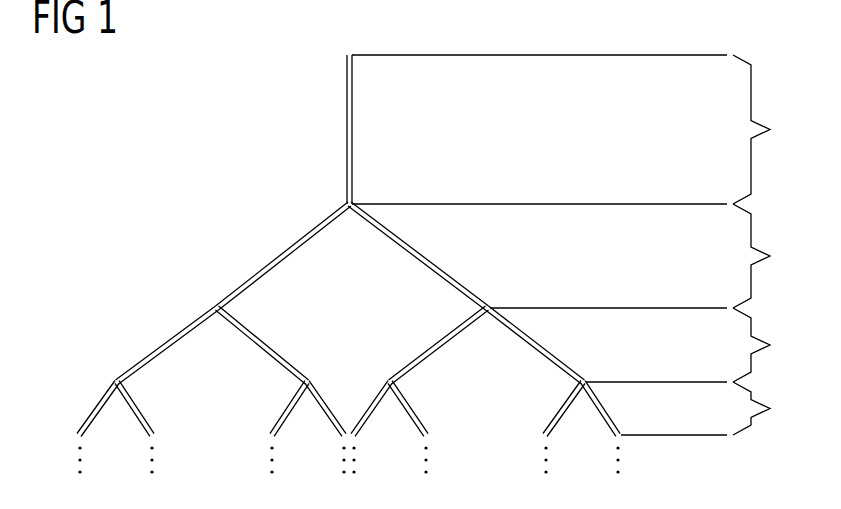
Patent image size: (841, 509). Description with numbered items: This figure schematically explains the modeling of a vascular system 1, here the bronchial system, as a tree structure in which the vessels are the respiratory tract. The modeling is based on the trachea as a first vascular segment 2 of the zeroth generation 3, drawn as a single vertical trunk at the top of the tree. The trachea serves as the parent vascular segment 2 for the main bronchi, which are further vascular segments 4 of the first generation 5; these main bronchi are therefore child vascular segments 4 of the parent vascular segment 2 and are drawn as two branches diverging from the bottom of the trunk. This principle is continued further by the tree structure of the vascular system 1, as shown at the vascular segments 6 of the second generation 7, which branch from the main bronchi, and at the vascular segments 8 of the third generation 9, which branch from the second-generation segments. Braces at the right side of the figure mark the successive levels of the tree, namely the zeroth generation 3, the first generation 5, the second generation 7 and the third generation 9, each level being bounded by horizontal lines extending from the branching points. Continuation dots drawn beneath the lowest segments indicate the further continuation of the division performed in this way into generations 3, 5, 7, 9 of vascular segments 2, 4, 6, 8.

The vascular system 1 is at (158, 150).
The first vascular segment 2 is at (347, 122).
The zeroth generation 3 is at (570, 129).
The further vascular segments 4 is at (279, 257).
The first generation 5 is at (639, 256).
The vascular segments of the second generation 6 is at (157, 348).
The second generation 7 is at (687, 345).
The vascular segments of the third generation 8 is at (97, 405).
The third generation 9 is at (704, 408).